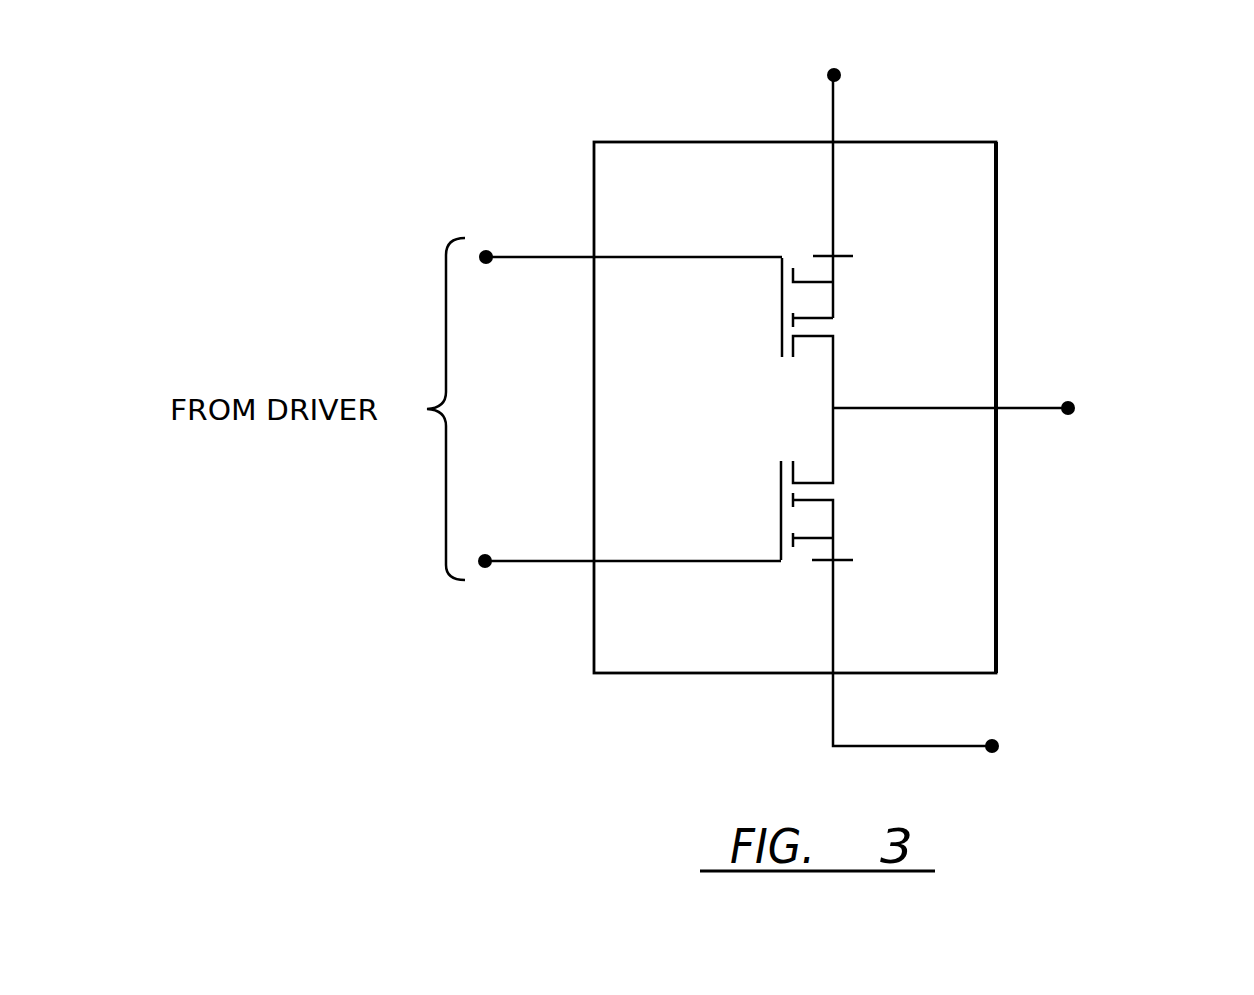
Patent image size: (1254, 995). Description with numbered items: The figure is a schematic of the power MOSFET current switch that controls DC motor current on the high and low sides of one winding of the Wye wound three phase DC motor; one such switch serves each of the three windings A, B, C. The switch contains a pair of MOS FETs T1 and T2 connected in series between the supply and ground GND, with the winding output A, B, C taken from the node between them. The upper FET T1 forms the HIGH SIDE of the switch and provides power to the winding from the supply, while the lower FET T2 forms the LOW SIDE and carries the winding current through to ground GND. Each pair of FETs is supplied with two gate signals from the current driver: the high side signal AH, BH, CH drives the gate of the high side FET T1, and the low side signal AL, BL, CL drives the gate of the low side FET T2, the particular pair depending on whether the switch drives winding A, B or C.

The MOS FET T1 is at (853, 332).
The MOS FET T2 is at (854, 484).
The ground terminal GND is at (948, 661).
The output phase terminal A, B, C is at (1006, 407).
The high side gate drive inputs AH, BH, CH is at (630, 243).
The low side gate drive inputs AL, BL, CL is at (629, 547).
The high side HIGH SIDE is at (938, 235).
The low side LOW SIDE is at (966, 554).